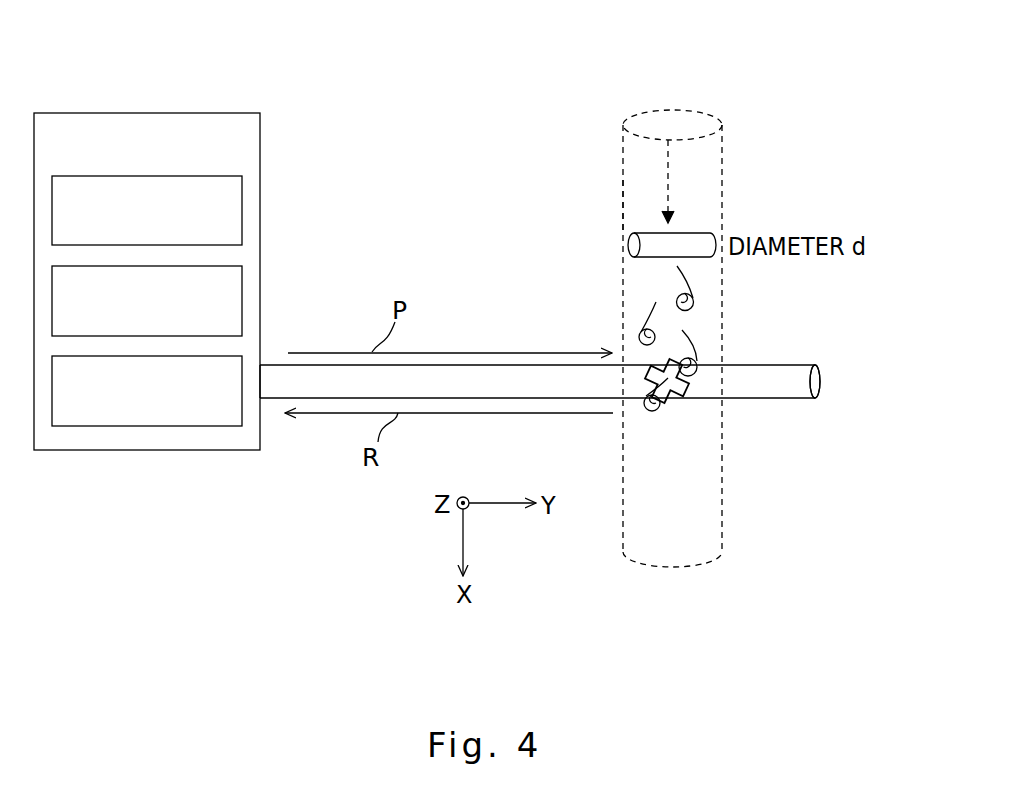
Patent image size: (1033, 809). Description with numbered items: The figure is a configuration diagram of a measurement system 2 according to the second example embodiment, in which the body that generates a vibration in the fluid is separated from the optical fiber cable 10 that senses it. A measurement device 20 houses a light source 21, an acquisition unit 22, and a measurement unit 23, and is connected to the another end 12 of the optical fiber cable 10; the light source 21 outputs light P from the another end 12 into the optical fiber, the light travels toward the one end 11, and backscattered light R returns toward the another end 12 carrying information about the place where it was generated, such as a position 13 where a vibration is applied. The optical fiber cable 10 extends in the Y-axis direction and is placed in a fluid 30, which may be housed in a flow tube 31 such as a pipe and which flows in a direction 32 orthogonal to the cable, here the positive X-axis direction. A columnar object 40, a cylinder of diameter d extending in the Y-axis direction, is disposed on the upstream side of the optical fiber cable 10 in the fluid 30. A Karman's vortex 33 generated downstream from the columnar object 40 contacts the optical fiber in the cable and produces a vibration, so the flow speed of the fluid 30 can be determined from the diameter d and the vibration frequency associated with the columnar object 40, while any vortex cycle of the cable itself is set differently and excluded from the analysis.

The measurement system 2 is at (451, 39).
The measurement device 20 is at (228, 113).
The light source 21 is at (230, 207).
The acquisition unit 22 is at (232, 305).
The measurement unit 23 is at (232, 390).
The optical fiber cable 10 is at (767, 363).
The one end 11 is at (818, 408).
The another end 12 is at (263, 396).
The position 13 is at (675, 398).
The fluid 30 is at (645, 158).
The flow tube 31 is at (618, 208).
The direction 32 is at (670, 185).
The Karman's vortex 33 is at (703, 292).
The columnar object 40 is at (627, 238).